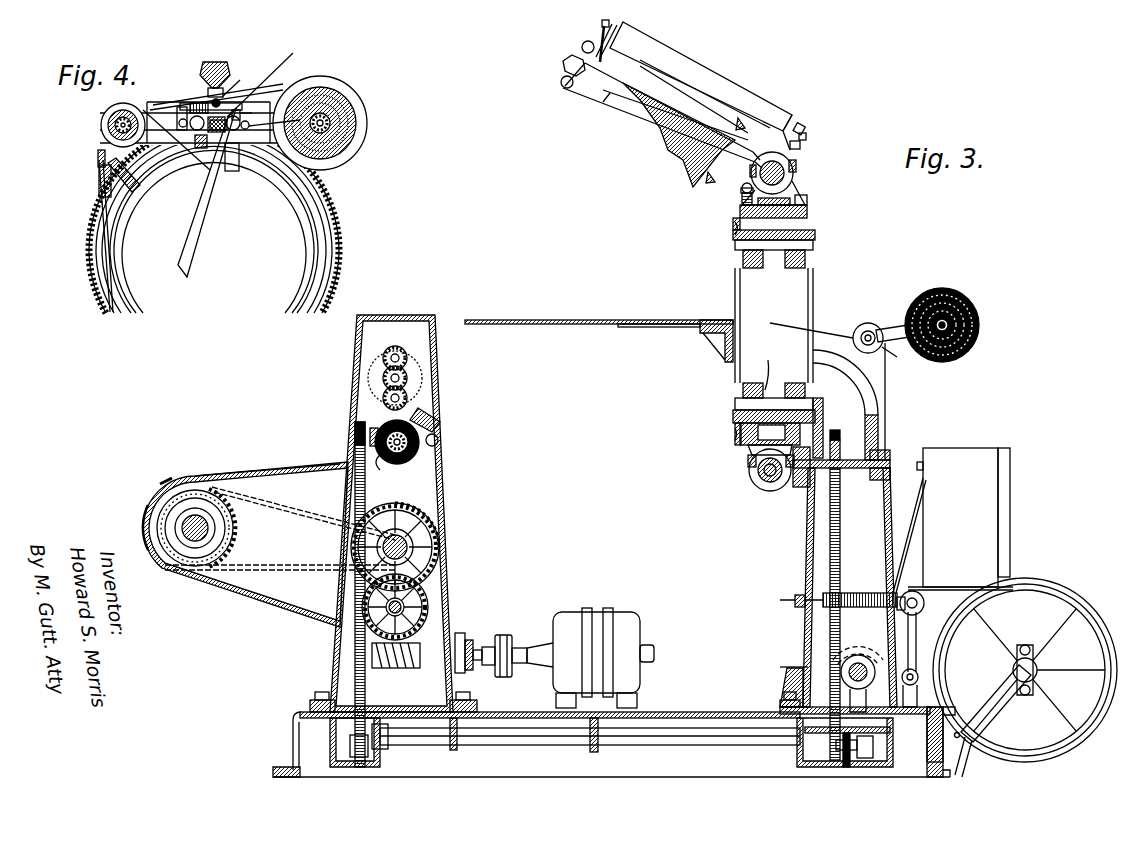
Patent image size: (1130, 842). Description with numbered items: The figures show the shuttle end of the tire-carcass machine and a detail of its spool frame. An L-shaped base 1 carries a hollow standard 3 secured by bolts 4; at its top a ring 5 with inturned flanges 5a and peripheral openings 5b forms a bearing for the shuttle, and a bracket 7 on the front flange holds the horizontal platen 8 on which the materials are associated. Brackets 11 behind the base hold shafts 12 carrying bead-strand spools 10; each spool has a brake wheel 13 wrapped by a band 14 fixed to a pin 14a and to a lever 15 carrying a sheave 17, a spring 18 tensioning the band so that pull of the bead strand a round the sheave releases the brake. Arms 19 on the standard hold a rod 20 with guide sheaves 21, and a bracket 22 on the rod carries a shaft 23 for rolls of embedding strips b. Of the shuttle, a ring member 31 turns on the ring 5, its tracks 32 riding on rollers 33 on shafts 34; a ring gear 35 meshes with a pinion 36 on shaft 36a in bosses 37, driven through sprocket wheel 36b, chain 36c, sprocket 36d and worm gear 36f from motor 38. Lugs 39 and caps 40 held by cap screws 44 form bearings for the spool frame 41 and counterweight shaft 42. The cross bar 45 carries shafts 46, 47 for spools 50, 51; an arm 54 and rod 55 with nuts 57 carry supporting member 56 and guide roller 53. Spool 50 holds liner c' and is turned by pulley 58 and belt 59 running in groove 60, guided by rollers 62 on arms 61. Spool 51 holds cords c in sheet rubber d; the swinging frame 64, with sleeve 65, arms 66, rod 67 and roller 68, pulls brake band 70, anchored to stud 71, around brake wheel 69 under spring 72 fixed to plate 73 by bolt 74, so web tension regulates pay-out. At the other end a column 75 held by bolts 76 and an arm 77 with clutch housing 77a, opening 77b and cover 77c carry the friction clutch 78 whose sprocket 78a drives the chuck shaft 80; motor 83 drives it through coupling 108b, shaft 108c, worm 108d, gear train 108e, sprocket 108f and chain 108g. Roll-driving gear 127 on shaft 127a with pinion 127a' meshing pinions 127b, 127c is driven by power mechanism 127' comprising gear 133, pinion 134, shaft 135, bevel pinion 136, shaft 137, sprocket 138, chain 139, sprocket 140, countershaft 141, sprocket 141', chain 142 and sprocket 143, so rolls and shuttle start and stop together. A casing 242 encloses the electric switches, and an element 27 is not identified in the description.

In FIG. 3, the base 1 is at (700, 718).
In FIG. 3, the standard 3 is at (805, 620).
In FIG. 3, the bolts 4 is at (788, 692).
In FIG. 3, the ring 5 is at (815, 236).
In FIG. 3, the inturned flanges 5a is at (742, 352).
In FIG. 3, the openings 5b is at (771, 252).
In FIG. 3, the bracket 7 is at (703, 335).
In FIG. 3, the platen 8 is at (553, 318).
In FIG. 3, the spool 10 is at (1088, 586).
In FIG. 3, the brackets 11 is at (998, 702).
In FIG. 3, the shafts 12 is at (1037, 668).
In FIG. 3, the brake wheels 13 is at (1062, 594).
In FIG. 3, the bands 14 is at (953, 587).
In FIG. 3, the pin 14a is at (958, 732).
In FIG. 3, the lever 15 is at (918, 676).
In FIG. 3, the guide sheave 17 is at (924, 603).
In FIG. 3, the spring 18 is at (863, 593).
In FIG. 3, the arms 19 is at (850, 350).
In FIG. 3, the rod 20 is at (866, 323).
In FIG. 3, the guide sheaves 21 is at (872, 323).
In FIG. 3, the bracket 22 is at (892, 328).
In FIG. 3, the shaft 23 is at (955, 343).
In FIG. 3, the plate 27 is at (628, 328).
In FIG. 3, the ring member 31 is at (808, 215).
In FIG. 3, the tracks 32 is at (735, 223).
In FIG. 3, the rollers 33 is at (805, 263).
In FIG. 3, the shafts 34 is at (735, 247).
In FIG. 3, the ring gear 35 is at (808, 210).
In FIG. 3, the pinion 36 is at (798, 487).
In FIG. 3, the shaft 36a is at (875, 480).
In FIG. 3, the sprocket wheel 36b is at (842, 450).
In FIG. 3, the sprocket chain 36c is at (840, 540).
In FIG. 3, the sprocket 36d is at (790, 760).
In FIG. 3, the worm gear 36f is at (880, 755).
In FIG. 3, the bosses 37 is at (840, 436).
In FIG. 3, the motor 38 is at (848, 650).
In FIG. 3, the lugs 39 is at (796, 195).
In FIG. 4, the lugs 39 is at (232, 171).
In FIG. 3, the caps 40 is at (784, 173).
In FIG. 4, the caps 40 is at (225, 117).
In FIG. 3, the frame 41 is at (797, 125).
In FIG. 3, the shaft 42 is at (764, 476).
In FIG. 3, the cap screws 44 is at (796, 163).
In FIG. 4, the cross bar 45 is at (259, 109).
In FIG. 4, the shaft 46 is at (105, 124).
In FIG. 4, the shaft 47 is at (330, 123).
In FIG. 3, the spool 50 is at (605, 108).
In FIG. 4, the spool 50 is at (123, 117).
In FIG. 4, the spool 51 is at (326, 118).
In FIG. 3, the guide roller 53 is at (600, 82).
In FIG. 3, the arm 54 is at (800, 146).
In FIG. 4, the arm 54 is at (208, 92).
In FIG. 3, the rod 55 is at (603, 32).
In FIG. 4, the rod 55 is at (230, 82).
In FIG. 3, the supporting member 56 is at (582, 44).
In FIG. 3, the nuts 57 is at (810, 133).
In FIG. 3, the grooved pulley 58 is at (741, 188).
In FIG. 4, the grooved pulley 58 is at (108, 113).
In FIG. 3, the belt 59 is at (742, 203).
In FIG. 4, the belt 59 is at (99, 178).
In FIG. 3, the groove 60 is at (735, 228).
In FIG. 4, the groove 60 is at (132, 222).
In FIG. 4, the arms 61 is at (190, 192).
In FIG. 3, the guide rollers 62 is at (742, 191).
In FIG. 4, the guide rollers 62 is at (98, 160).
In FIG. 3, the frame 64 is at (645, 38).
In FIG. 3, the sleeve 65 is at (700, 80).
In FIG. 4, the sleeve 65 is at (216, 62).
In FIG. 3, the depending arms 66 is at (608, 52).
In FIG. 4, the depending arms 66 is at (200, 103).
In FIG. 4, the rod 67 is at (227, 94).
In FIG. 3, the roller 68 is at (700, 115).
In FIG. 4, the roller 68 is at (246, 107).
In FIG. 4, the brake wheel 69 is at (330, 80).
In FIG. 4, the brake band 70 is at (270, 100).
In FIG. 4, the stud 71 is at (249, 125).
In FIG. 4, the spring 72 is at (181, 107).
In FIG. 4, the plate 73 is at (199, 118).
In FIG. 4, the bolt 74 is at (159, 151).
In FIG. 3, the column 75 is at (440, 562).
In FIG. 3, the bolts 76 is at (316, 696).
In FIG. 3, the arm 77 is at (260, 600).
In FIG. 3, the housing 77a is at (206, 476).
In FIG. 3, the opening 77b is at (160, 486).
In FIG. 3, the cover 77c is at (145, 508).
In FIG. 3, the friction clutch mechanism 78 is at (215, 528).
In FIG. 3, the driven element 78a is at (232, 546).
In FIG. 3, the driven shaft 80 is at (206, 522).
In FIG. 3, the motor 83 is at (578, 612).
In FIG. 3, the flexible coupling 108b is at (505, 634).
In FIG. 3, the shaft 108c is at (470, 640).
In FIG. 3, the worm 108d is at (405, 668).
In FIG. 3, the gear train 108e is at (428, 600).
In FIG. 3, the sprocket 108f is at (412, 508).
In FIG. 3, the chain 108g is at (298, 565).
In FIG. 3, the gear 127 is at (418, 374).
In FIG. 3, the shaft 127a is at (362, 378).
In FIG. 3, the pinion 127a' is at (432, 378).
In FIG. 3, the pinion 127b is at (398, 346).
In FIG. 3, the pinion 127c is at (408, 396).
In FIG. 3, the power mechanism 127' is at (404, 449).
In FIG. 3, the gear 133 is at (440, 420).
In FIG. 3, the pinion 134 is at (438, 441).
In FIG. 3, the shaft 135 is at (419, 455).
In FIG. 3, the bevel pinion 136 is at (374, 428).
In FIG. 3, the shaft 137 is at (390, 466).
In FIG. 3, the sprocket 138 is at (355, 430).
In FIG. 3, the chain 139 is at (355, 484).
In FIG. 3, the sprocket 140 is at (368, 747).
In FIG. 3, the countershaft 141 is at (586, 742).
In FIG. 3, the sprocket 141' is at (854, 765).
In FIG. 3, the chain 142 is at (843, 760).
In FIG. 3, the sprocket 143 is at (838, 750).
In FIG. 3, the casing 242 is at (960, 455).
In FIG. 3, the bead strands a is at (672, 145).
In FIG. 3, the strips b is at (942, 290).
In FIG. 3, the cords c is at (679, 135).
In FIG. 4, the cords c is at (262, 79).
In FIG. 4, the liner material c' is at (214, 97).
In FIG. 4, the sheet rubber d is at (247, 133).